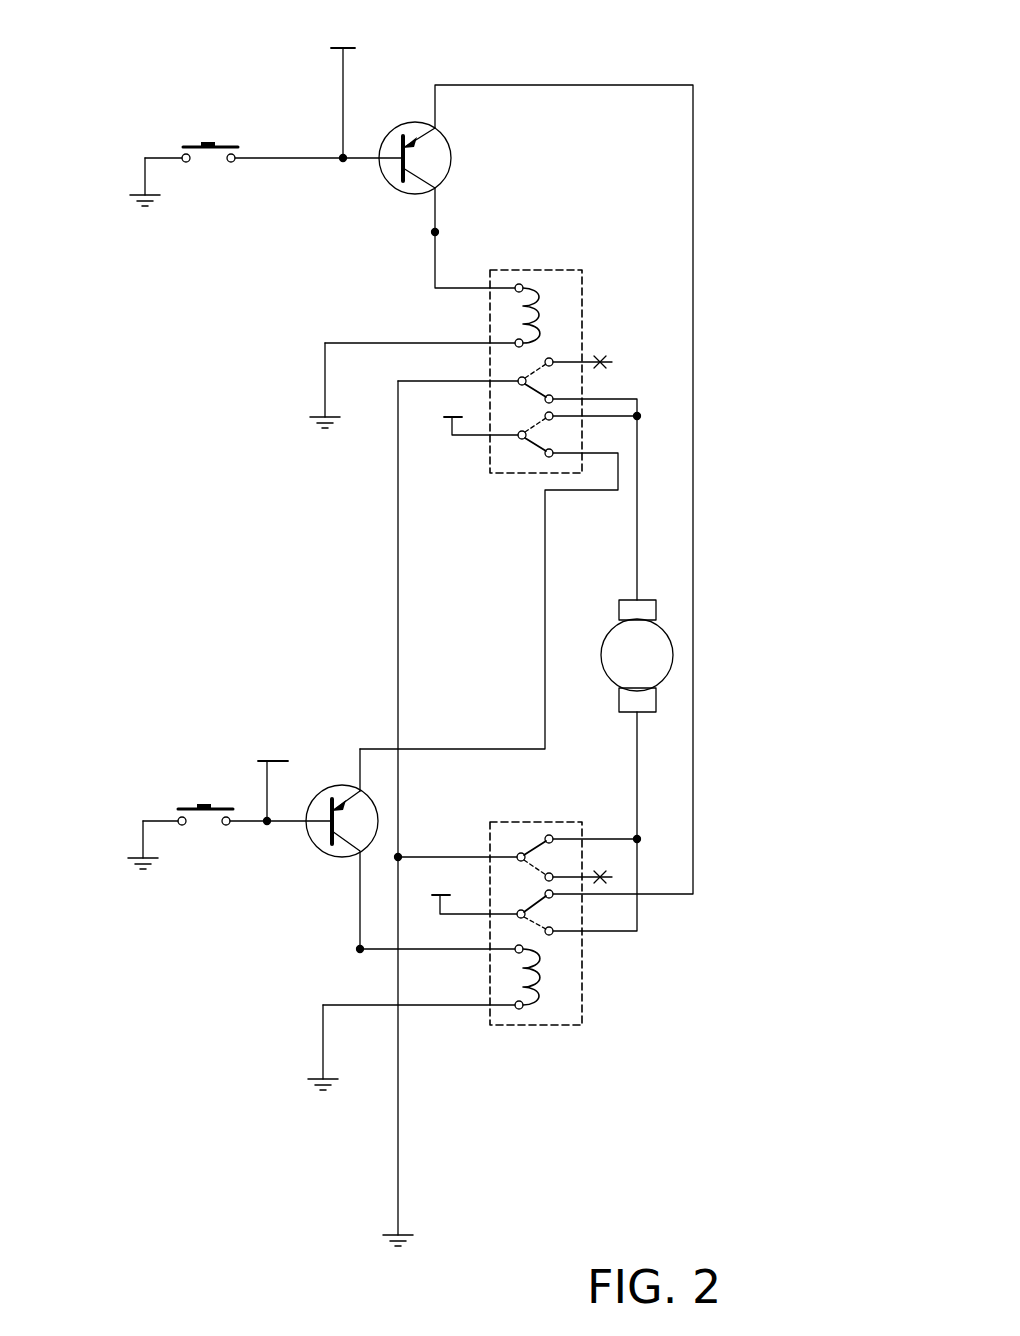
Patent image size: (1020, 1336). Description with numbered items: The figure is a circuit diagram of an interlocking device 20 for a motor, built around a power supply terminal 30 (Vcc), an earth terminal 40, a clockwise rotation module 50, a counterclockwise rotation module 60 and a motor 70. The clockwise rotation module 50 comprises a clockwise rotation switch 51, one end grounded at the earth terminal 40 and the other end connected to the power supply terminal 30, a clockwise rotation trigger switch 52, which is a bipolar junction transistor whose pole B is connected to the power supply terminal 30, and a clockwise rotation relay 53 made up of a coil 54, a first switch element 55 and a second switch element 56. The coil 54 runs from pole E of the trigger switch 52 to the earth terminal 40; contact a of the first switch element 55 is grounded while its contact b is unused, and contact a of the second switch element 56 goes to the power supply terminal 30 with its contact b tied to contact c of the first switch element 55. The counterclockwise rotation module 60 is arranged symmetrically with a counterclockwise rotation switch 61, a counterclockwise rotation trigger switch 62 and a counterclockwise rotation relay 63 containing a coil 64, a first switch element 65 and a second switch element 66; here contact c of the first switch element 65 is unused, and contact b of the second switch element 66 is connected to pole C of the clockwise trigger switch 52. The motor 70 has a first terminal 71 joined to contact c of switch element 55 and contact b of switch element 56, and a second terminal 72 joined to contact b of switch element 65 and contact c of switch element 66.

The interlocking device 20 is at (733, 262).
The power supply terminal 30 is at (318, 36).
The earth terminal 40 is at (135, 192).
The clockwise rotation module 50 is at (325, 243).
The clockwise rotation switch 51 is at (185, 145).
The clockwise rotation trigger switch 52 is at (413, 118).
The clockwise rotation relay 53 is at (560, 268).
The coil 54 is at (550, 318).
The first switch element 55 is at (565, 370).
The second switch element 56 is at (522, 440).
The counterclockwise rotation module 60 is at (305, 935).
The counterclockwise rotation switch 61 is at (183, 808).
The counterclockwise rotation trigger switch 62 is at (340, 790).
The counterclockwise rotation relay 63 is at (545, 820).
The coil 64 is at (533, 1002).
The first switch element 65 is at (567, 858).
The second switch element 66 is at (565, 922).
The motor 70 is at (673, 640).
The first terminal 71 is at (632, 608).
The second terminal 72 is at (643, 708).